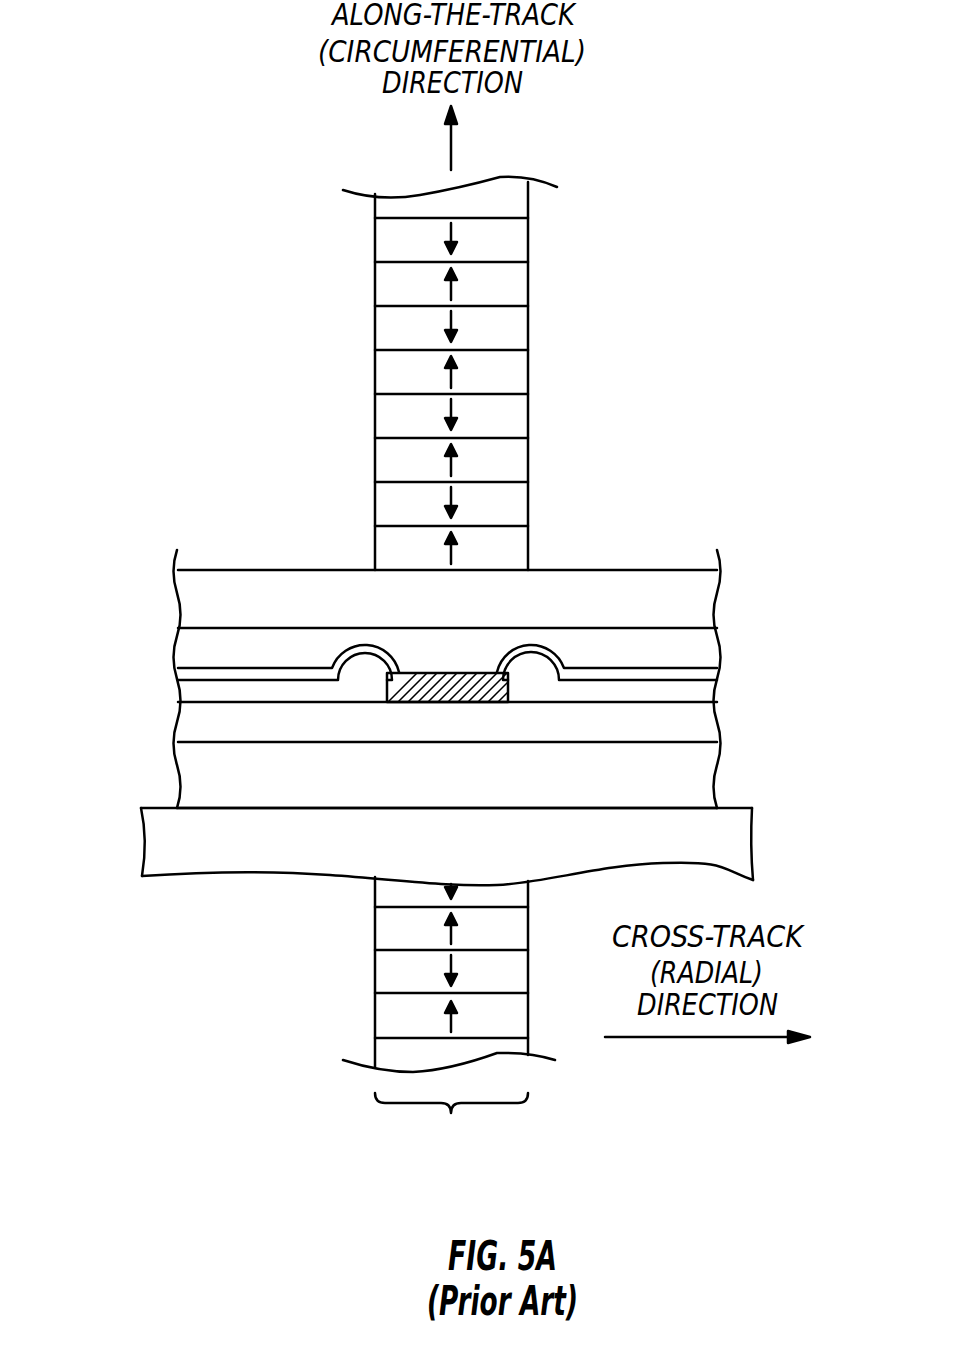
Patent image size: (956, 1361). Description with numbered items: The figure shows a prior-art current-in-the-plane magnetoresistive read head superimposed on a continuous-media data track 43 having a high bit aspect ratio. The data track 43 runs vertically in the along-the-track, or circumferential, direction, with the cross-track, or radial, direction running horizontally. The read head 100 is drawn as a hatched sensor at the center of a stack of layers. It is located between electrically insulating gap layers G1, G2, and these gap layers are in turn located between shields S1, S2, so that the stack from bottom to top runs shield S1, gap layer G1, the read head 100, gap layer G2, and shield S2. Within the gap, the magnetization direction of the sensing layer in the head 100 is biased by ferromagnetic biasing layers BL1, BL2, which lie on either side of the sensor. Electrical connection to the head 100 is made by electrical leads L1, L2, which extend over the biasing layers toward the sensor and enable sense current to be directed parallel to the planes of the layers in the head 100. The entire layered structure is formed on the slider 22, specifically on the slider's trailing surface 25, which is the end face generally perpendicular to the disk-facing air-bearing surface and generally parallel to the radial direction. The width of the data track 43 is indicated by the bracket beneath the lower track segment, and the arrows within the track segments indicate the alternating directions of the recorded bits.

The shield S2 is at (708, 590).
The gap layer G2 is at (707, 643).
The electrical lead L2 is at (708, 673).
The electrical lead L1 is at (186, 672).
The ferromagnetic biasing layer BL2 is at (707, 688).
The ferromagnetic biasing layer BL1 is at (193, 689).
The gap layer G1 is at (700, 723).
The shield S1 is at (695, 765).
The read head 100 is at (412, 672).
The trailing surface 25 is at (157, 808).
The slider 22 is at (160, 833).
The data track 43 is at (449, 1018).